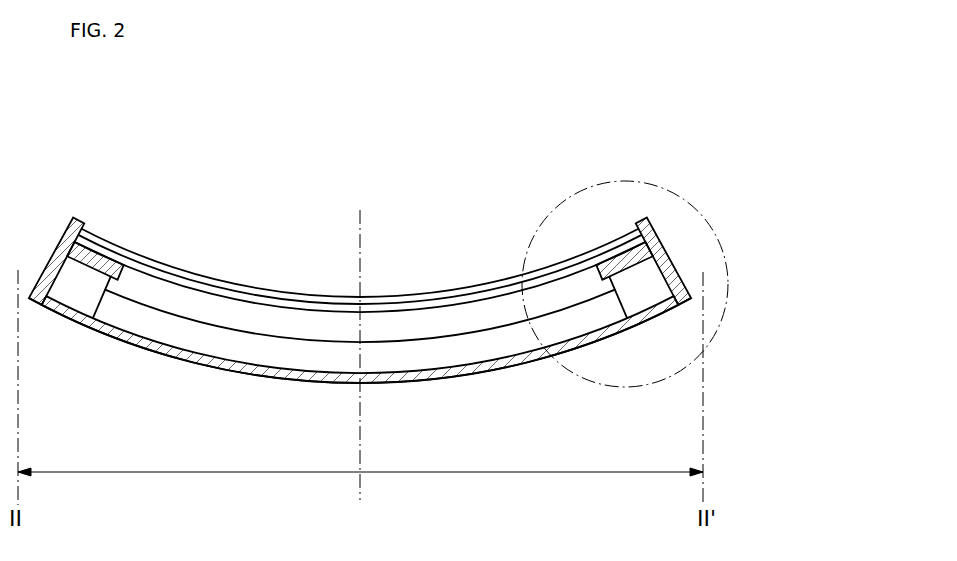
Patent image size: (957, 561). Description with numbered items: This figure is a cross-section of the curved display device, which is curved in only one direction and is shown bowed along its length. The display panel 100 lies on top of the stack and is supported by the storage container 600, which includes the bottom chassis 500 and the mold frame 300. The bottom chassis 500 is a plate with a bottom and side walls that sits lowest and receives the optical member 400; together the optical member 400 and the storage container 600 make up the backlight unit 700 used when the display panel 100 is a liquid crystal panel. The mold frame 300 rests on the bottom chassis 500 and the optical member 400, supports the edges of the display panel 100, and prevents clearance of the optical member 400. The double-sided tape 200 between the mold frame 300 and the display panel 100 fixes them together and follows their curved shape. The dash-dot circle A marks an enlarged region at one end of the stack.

The display panel 100 is at (440, 292).
The double-sided tape 200 is at (620, 259).
The mold frame 300 is at (653, 236).
The optical member 400 is at (690, 301).
The bottom chassis 500 is at (678, 283).
The storage container 600 is at (442, 244).
The backlight unit 700 is at (472, 283).
The enlarged region A is at (624, 182).